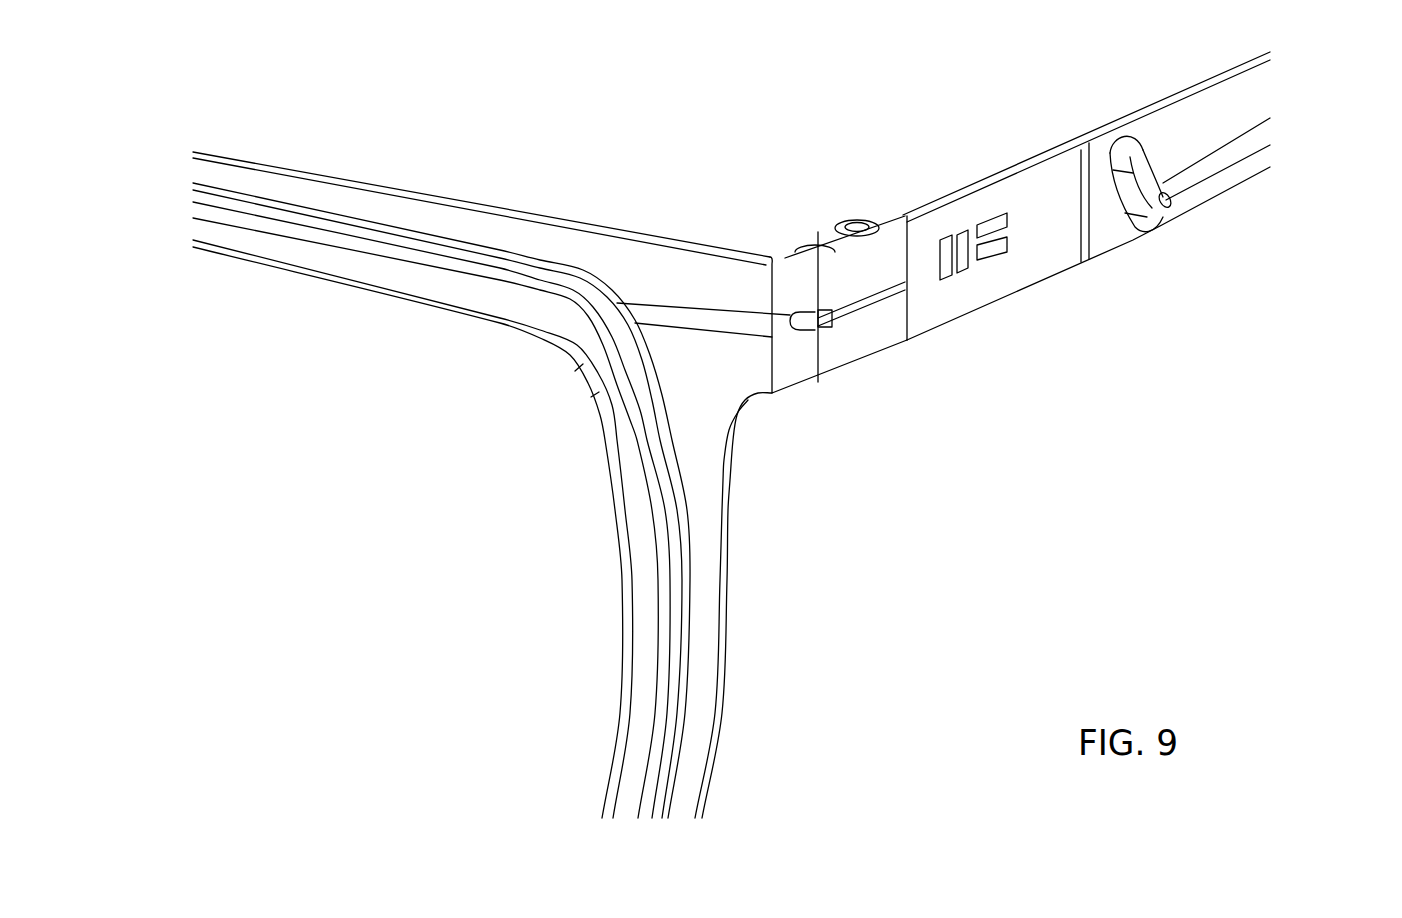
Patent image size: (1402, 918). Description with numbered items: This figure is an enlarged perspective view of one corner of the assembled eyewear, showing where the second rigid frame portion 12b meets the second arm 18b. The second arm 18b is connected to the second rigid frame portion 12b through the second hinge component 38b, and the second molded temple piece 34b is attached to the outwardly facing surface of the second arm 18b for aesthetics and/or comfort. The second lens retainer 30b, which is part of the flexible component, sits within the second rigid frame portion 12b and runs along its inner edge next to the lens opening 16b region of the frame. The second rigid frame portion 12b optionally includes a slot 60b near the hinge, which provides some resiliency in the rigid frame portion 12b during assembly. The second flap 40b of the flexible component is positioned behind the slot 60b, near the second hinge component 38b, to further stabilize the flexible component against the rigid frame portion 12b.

The second rigid frame portion 12b is at (643, 247).
The lens opening 16b is at (408, 542).
The second arm 18b is at (1035, 187).
The second lens retainer 30b is at (657, 530).
The second molded temple piece 34b is at (1200, 183).
The second hinge component 38b is at (857, 223).
The second flap 40b is at (690, 320).
The slot 60b is at (760, 335).